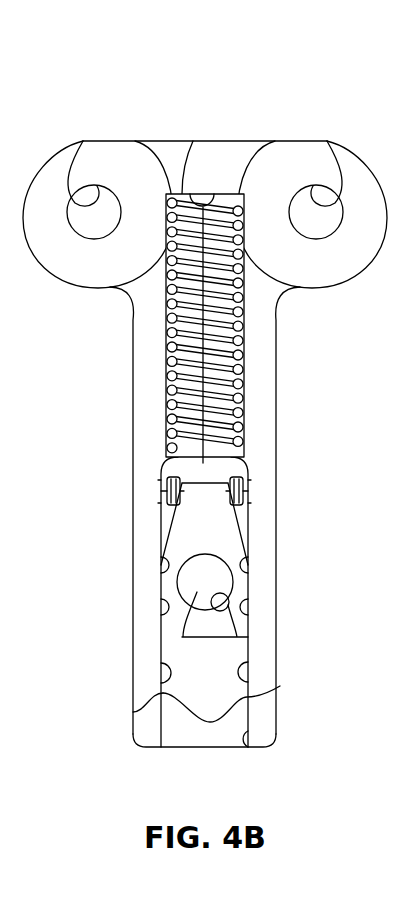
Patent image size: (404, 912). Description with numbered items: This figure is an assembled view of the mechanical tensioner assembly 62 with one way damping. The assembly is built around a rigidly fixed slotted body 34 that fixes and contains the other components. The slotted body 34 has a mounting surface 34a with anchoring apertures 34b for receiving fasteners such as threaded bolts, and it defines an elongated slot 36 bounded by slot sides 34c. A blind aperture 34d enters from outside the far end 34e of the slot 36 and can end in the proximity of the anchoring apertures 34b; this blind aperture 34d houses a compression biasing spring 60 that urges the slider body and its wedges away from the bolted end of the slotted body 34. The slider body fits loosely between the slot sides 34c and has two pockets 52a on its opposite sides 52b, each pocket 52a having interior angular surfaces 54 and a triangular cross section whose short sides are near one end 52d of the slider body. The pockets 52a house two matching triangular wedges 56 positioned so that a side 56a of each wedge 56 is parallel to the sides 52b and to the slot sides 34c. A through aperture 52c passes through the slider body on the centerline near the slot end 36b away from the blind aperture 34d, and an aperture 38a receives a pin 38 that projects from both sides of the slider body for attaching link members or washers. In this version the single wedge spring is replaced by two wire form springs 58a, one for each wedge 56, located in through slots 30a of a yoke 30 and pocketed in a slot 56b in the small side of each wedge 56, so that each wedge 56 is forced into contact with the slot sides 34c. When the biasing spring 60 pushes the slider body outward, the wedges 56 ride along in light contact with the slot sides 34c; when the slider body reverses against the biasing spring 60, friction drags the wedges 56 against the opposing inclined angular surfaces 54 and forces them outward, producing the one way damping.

The mechanical tensioner assembly 62 is at (142, 100).
The slotted body 34 is at (217, 141).
The mounting surface 34a is at (248, 130).
The anchoring apertures 34b is at (83, 141).
The slot sides 34c is at (152, 676).
The blind aperture 34d is at (193, 141).
The far end 34e is at (188, 747).
The biasing spring 60 is at (205, 323).
The yoke 30 is at (212, 483).
The through slots 30a is at (166, 385).
The end of slider body 52d is at (232, 385).
The wire form springs 58a is at (141, 555).
The pockets 52a is at (158, 491).
The wedge side 56a is at (158, 480).
The wedge slot 56b is at (160, 503).
The wedges 56 is at (158, 552).
The angular surfaces 54 is at (163, 583).
The slider body sides 52b is at (163, 618).
The pin 38 is at (182, 637).
The pin aperture 38a is at (229, 606).
The slot 36 is at (219, 675).
The slot end 36b is at (150, 697).
The through aperture 52c is at (233, 740).